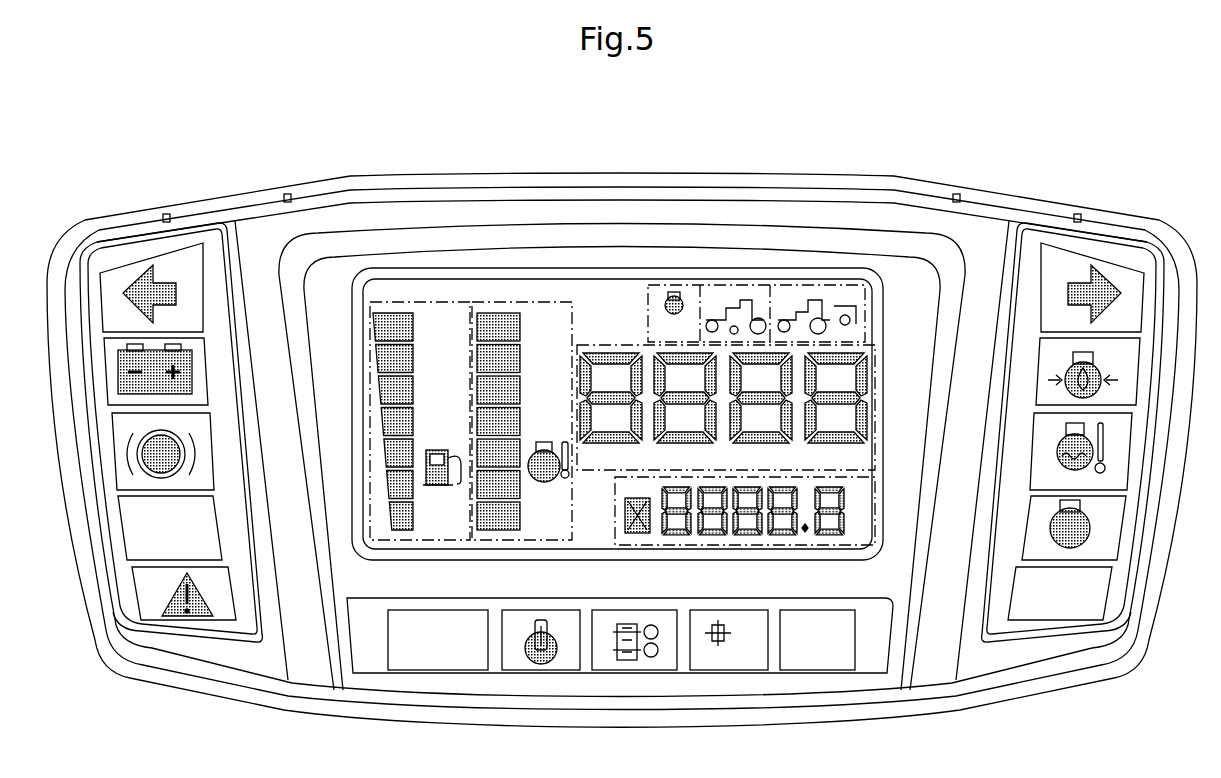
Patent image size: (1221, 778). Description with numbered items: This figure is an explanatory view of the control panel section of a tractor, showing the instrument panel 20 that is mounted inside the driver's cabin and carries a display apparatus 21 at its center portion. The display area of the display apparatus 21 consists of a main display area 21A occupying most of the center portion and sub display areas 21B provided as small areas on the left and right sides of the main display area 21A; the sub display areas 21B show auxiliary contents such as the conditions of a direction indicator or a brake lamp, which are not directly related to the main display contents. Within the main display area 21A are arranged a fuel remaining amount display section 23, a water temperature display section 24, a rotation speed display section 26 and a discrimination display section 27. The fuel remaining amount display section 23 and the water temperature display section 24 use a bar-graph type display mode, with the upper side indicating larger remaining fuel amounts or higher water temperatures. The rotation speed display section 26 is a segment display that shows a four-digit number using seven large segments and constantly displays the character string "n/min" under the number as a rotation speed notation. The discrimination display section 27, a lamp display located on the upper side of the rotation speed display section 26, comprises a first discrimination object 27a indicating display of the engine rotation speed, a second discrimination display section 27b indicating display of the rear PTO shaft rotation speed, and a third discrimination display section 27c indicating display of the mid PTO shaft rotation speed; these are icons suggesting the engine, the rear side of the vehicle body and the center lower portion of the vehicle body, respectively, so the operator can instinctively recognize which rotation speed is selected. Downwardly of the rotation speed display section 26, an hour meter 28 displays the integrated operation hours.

The instrument panel 20 is at (335, 147).
The display apparatus 21 is at (243, 183).
The main display area 21A is at (467, 237).
The sub display areas 21B is at (131, 259).
The fuel remaining amount display section 23 is at (425, 300).
The water temperature display section 24 is at (525, 300).
The rotation speed display section 26 is at (590, 343).
The discrimination display section 27 is at (756, 214).
The first discrimination object 27a is at (668, 287).
The second discrimination display section 27b is at (817, 232).
The third discrimination display section 27c is at (748, 287).
The hour meter 28 is at (668, 545).